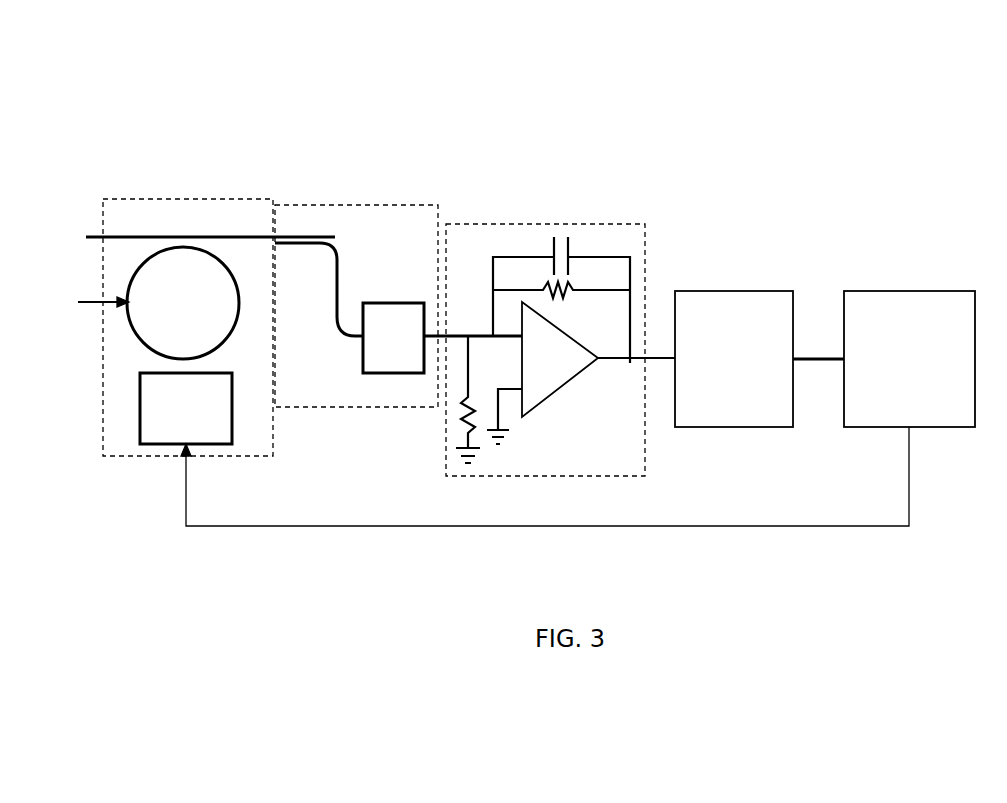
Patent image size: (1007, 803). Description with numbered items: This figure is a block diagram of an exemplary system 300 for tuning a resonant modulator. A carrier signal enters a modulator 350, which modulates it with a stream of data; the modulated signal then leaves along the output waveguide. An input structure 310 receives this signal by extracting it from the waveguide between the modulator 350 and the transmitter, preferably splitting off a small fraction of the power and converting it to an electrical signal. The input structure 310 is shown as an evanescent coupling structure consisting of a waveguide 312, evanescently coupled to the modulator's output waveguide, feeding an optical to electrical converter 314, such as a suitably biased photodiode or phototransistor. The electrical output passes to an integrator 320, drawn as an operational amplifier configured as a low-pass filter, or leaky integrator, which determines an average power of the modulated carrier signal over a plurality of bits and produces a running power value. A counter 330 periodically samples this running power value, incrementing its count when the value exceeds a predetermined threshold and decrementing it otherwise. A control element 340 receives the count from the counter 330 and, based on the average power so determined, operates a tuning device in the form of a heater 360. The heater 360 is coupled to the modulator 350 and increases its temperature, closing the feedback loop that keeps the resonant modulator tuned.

The system 300 is at (742, 104).
The input structure 310 is at (370, 205).
The waveguide 312 is at (315, 248).
The optical to electrical (O/E) converter 314 is at (378, 303).
The integrator 320 is at (530, 224).
The counter 330 is at (675, 291).
The control element 340 is at (917, 291).
The modulator 350 is at (209, 200).
The heater 360 is at (233, 445).